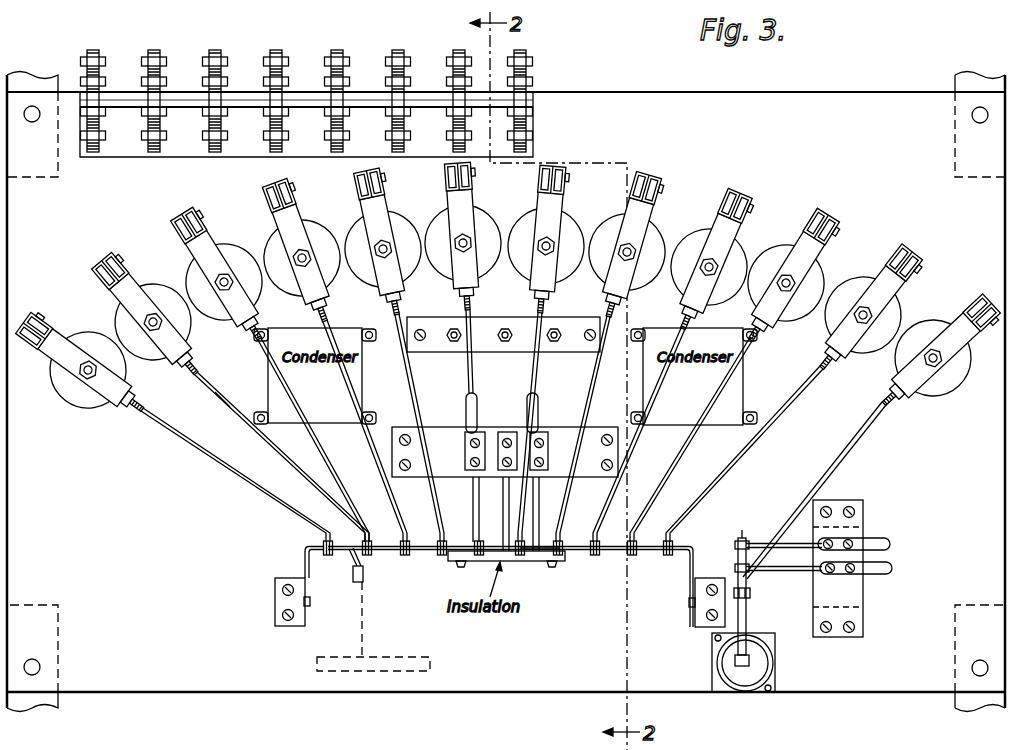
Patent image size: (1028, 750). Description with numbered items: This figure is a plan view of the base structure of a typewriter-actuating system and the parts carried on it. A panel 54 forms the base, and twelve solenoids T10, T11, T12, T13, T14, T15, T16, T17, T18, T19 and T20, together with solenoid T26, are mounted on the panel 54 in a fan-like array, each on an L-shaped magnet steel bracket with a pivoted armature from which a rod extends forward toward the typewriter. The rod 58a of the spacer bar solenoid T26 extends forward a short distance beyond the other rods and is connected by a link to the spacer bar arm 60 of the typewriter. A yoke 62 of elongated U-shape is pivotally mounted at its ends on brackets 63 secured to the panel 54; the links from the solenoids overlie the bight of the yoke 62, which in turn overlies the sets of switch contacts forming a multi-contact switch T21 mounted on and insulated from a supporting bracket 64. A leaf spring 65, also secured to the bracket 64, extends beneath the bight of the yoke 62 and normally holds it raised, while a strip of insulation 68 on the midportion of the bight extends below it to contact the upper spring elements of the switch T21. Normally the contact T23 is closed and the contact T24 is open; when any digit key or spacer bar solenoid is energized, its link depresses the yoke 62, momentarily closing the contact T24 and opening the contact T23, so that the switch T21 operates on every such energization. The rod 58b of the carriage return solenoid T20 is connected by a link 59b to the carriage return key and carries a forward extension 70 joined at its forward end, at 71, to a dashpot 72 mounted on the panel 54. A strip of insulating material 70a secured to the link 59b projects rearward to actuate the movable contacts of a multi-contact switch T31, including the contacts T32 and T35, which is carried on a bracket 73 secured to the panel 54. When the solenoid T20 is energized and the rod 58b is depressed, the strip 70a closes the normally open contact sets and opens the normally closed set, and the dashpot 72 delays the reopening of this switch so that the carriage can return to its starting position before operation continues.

The panel 54 is at (651, 92).
The solenoid T10 is at (893, 318).
The solenoid T11 is at (80, 400).
The solenoid T12 is at (232, 245).
The solenoid T13 is at (315, 230).
The solenoid T14 is at (397, 216).
The solenoid T15 is at (487, 220).
The solenoid T16 is at (570, 217).
The solenoid T17 is at (662, 226).
The solenoid T18 is at (738, 257).
The solenoid T19 is at (815, 283).
The solenoid T20 is at (953, 383).
The solenoid T26 is at (153, 286).
The multi-contact switch T21 is at (537, 397).
The switch contact T23 is at (445, 557).
The switch contact T24 is at (537, 558).
The multi-contact switch T31 is at (876, 556).
The switch contact T32 is at (737, 546).
The switch contact T35 is at (737, 569).
The rod 58a is at (230, 415).
The rod 58b is at (862, 445).
The link 59b is at (750, 594).
The spacer bar arm 60 is at (363, 627).
The yoke 62 is at (304, 550).
The brackets 63 is at (276, 606).
The supporting bracket 64 is at (562, 428).
The leaf spring 65 is at (508, 562).
The strip of insulation 68 is at (497, 562).
The forward extension 70 is at (749, 617).
The strip of insulating material 70a is at (740, 540).
The connection 71 is at (752, 664).
The dashpot 72 is at (720, 663).
The bracket 73 is at (866, 508).